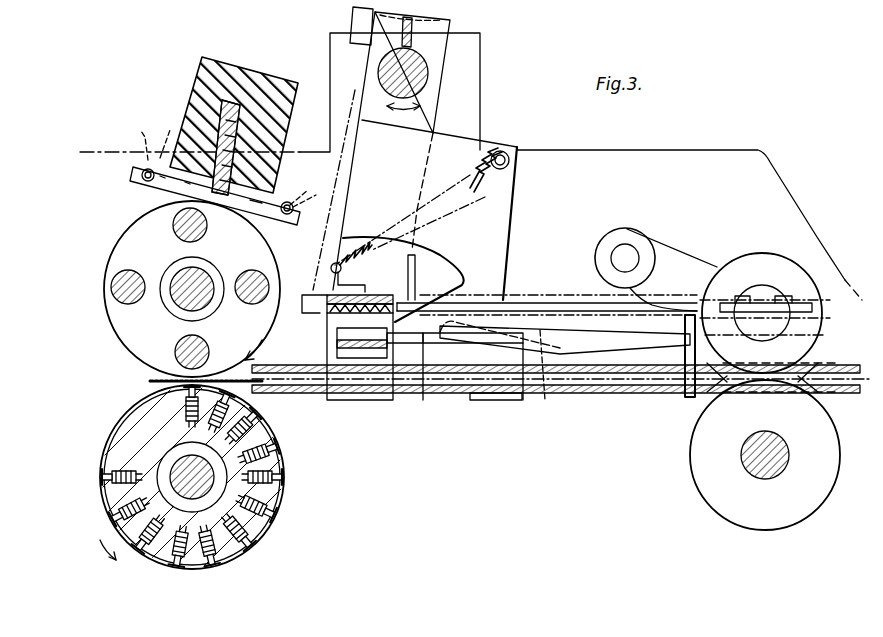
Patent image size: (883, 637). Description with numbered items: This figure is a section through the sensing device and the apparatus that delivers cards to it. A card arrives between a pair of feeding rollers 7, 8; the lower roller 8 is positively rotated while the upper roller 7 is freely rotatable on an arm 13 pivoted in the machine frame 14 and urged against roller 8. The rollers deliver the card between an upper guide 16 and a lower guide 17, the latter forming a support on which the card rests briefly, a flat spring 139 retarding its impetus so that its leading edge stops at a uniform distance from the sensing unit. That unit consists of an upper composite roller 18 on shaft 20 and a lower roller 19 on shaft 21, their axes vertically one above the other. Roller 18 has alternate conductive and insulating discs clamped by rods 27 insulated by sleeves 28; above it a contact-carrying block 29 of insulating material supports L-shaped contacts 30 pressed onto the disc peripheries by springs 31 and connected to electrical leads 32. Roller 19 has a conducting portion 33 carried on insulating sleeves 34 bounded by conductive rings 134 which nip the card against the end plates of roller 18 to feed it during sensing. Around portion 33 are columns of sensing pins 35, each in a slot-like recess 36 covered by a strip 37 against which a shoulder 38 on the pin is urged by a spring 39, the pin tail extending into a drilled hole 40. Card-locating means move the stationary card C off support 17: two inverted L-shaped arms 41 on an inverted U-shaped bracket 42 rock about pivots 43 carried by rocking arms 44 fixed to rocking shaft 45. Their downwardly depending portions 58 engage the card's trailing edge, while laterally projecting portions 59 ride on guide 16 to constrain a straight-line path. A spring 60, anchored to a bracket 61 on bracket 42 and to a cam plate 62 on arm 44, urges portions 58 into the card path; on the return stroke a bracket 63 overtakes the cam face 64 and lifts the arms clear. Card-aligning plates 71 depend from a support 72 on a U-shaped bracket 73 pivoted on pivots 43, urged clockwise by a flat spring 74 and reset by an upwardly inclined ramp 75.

The feeding roller 7 is at (738, 260).
The feeding roller 8 is at (692, 455).
The arm 13 is at (708, 258).
The machine frame 14 is at (592, 160).
The upper guide 16 is at (405, 395).
The guide (support) 17 is at (428, 395).
The upper composite roller 18 is at (118, 224).
The lower roller 19 is at (130, 556).
The rotatable shaft 20 is at (175, 292).
The rotatable shaft 21 is at (180, 470).
The rod 27 is at (178, 231).
The insulating sleeve 28 is at (112, 280).
The contact-carrying block 29 is at (210, 72).
The L-shaped contact 30 is at (144, 170).
The spring 31 is at (222, 104).
The electrical lead 32 is at (156, 160).
The roller portion 33 is at (148, 400).
The sleeve 34 is at (170, 455).
The sensing pin 35 is at (240, 545).
The recess 36 is at (276, 462).
The strip 37 is at (270, 432).
The shoulder 38 is at (280, 486).
The spring 39 is at (277, 500).
The drilled hole 40 is at (130, 498).
The inverted L-shaped arm 41 is at (512, 300).
The inverted U-shaped bracket 42 is at (460, 283).
The pivot 43 is at (358, 400).
The rocking arm 44 is at (425, 122).
The rocking shaft 45 is at (428, 87).
The downwardly depending portion 58 is at (688, 398).
The laterally projecting portion 59 is at (660, 355).
The spring 60 is at (500, 160).
The bracket 61 is at (365, 290).
The cam plate 62 is at (520, 165).
The bracket 63 is at (416, 274).
The cam face 64 is at (455, 272).
The flat plate 71 is at (485, 395).
The support 72 is at (460, 345).
The U-shaped bracket 73 is at (340, 400).
The flat spring 74 is at (510, 400).
The ramp 75 is at (545, 400).
The ring 134 is at (142, 385).
The flat spring 139 is at (630, 355).
The card C is at (596, 380).